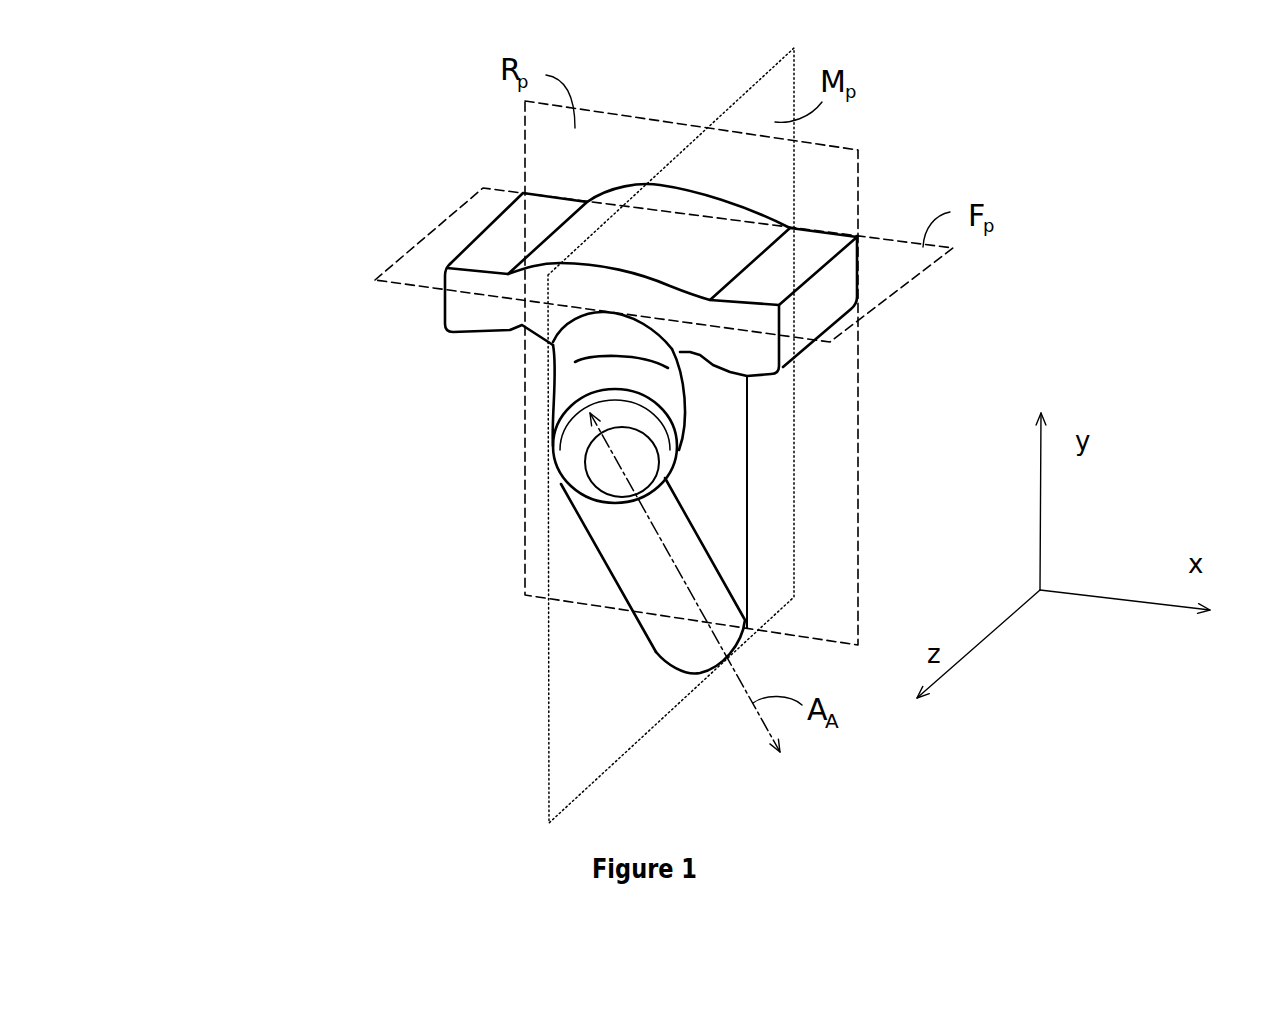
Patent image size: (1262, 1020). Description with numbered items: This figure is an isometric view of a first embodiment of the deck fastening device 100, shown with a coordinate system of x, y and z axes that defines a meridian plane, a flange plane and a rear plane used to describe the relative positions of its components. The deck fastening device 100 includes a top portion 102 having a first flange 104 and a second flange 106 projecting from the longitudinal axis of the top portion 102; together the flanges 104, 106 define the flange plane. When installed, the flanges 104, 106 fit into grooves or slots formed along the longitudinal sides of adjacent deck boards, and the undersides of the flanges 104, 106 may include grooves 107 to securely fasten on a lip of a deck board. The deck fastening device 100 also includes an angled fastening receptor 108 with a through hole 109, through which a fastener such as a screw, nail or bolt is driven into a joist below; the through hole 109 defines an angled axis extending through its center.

The deck fastening device 100 is at (255, 289).
The top portion 102 is at (704, 259).
The first flange 104 is at (783, 355).
The second flange 106 is at (504, 265).
The groove 107 is at (520, 338).
The angled fastening receptor 108 is at (662, 570).
The through hole 109 is at (608, 457).